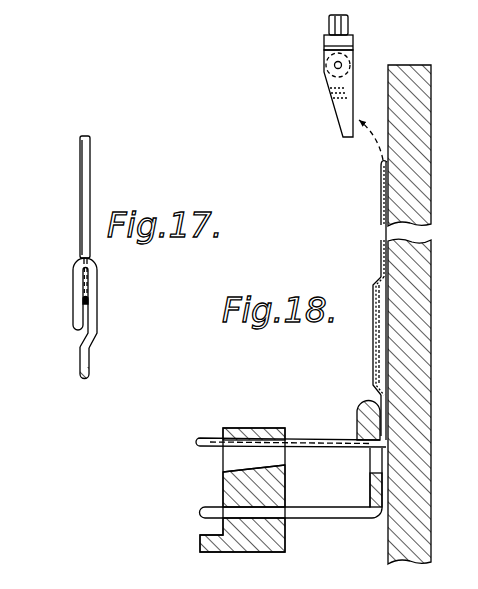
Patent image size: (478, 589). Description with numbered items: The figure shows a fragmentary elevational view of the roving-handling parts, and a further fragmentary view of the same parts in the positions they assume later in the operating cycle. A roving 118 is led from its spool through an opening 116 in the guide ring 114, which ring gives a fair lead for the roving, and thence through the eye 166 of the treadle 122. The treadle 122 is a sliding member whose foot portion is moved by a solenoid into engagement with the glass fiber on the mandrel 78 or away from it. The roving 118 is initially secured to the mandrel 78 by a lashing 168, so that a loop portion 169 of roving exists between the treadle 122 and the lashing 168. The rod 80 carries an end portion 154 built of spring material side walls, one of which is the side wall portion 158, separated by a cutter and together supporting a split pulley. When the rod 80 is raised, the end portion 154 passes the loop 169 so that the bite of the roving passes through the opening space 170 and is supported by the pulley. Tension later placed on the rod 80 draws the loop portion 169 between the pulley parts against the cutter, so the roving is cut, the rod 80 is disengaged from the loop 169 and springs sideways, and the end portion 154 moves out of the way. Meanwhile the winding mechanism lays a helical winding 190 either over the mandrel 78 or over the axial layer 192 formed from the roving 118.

In FIG. 18, the mandrel 78 is at (423, 210).
In FIG. 18, the rod 80 is at (329, 24).
In FIG. 18, the guide ring 114 is at (254, 543).
In FIG. 18, the opening 116 is at (233, 468).
In FIG. 17, the roving 118 is at (82, 308).
In FIG. 18, the roving 118 is at (213, 438).
In FIG. 17, the treadle 122 is at (78, 288).
In FIG. 18, the treadle 122 is at (358, 406).
In FIG. 18, the end portion 154 is at (338, 130).
In FIG. 18, the side wall portion 158 is at (340, 99).
In FIG. 17, the eye 166 is at (89, 324).
In FIG. 18, the eye 166 is at (376, 462).
In FIG. 18, the lashing 168 is at (379, 358).
In FIG. 17, the loop portion 169 is at (78, 173).
In FIG. 18, the loop portion 169 is at (380, 342).
In FIG. 18, the opening space 170 is at (324, 44).
In FIG. 18, the helical winding 190 is at (373, 322).
In FIG. 18, the axial layer 192 is at (381, 258).